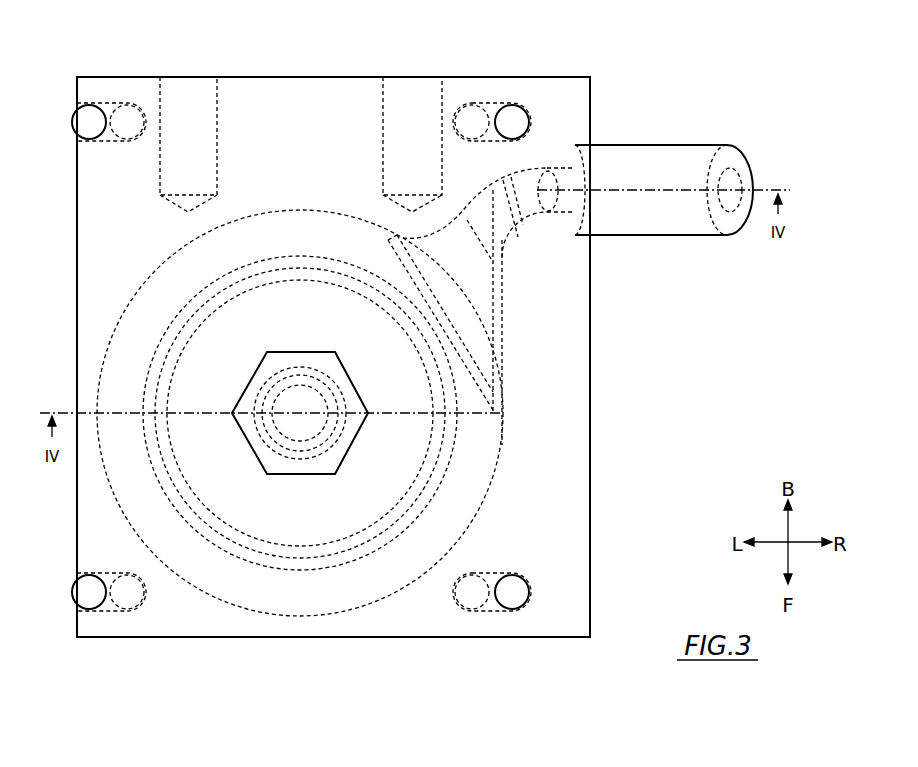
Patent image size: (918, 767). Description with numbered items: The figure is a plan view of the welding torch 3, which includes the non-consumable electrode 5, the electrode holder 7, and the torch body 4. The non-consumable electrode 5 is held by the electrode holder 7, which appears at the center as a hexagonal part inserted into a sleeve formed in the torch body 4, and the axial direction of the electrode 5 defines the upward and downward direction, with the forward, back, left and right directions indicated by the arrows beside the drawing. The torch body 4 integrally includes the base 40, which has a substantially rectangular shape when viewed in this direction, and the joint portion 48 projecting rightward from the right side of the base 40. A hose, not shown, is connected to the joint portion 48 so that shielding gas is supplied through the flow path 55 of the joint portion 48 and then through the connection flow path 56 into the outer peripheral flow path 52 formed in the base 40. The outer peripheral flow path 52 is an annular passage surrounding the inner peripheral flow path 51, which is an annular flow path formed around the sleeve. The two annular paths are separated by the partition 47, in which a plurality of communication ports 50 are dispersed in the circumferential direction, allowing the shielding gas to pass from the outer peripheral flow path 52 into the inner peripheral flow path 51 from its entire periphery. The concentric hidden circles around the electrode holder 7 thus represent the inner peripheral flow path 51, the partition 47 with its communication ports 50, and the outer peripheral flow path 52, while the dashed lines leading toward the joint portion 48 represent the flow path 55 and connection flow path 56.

The welding torch 3 is at (711, 428).
The torch body 4 is at (592, 537).
The non-consumable electrode 5 is at (230, 416).
The electrode holder 7 is at (258, 368).
The base 40 is at (590, 377).
The partition 47 is at (299, 572).
The joint portion 48 is at (663, 143).
The communication port 50 is at (264, 560).
The inner peripheral flow path 51 is at (237, 545).
The outer peripheral flow path 52 is at (352, 598).
The flow path 55 is at (657, 206).
The connection flow path 56 is at (518, 239).